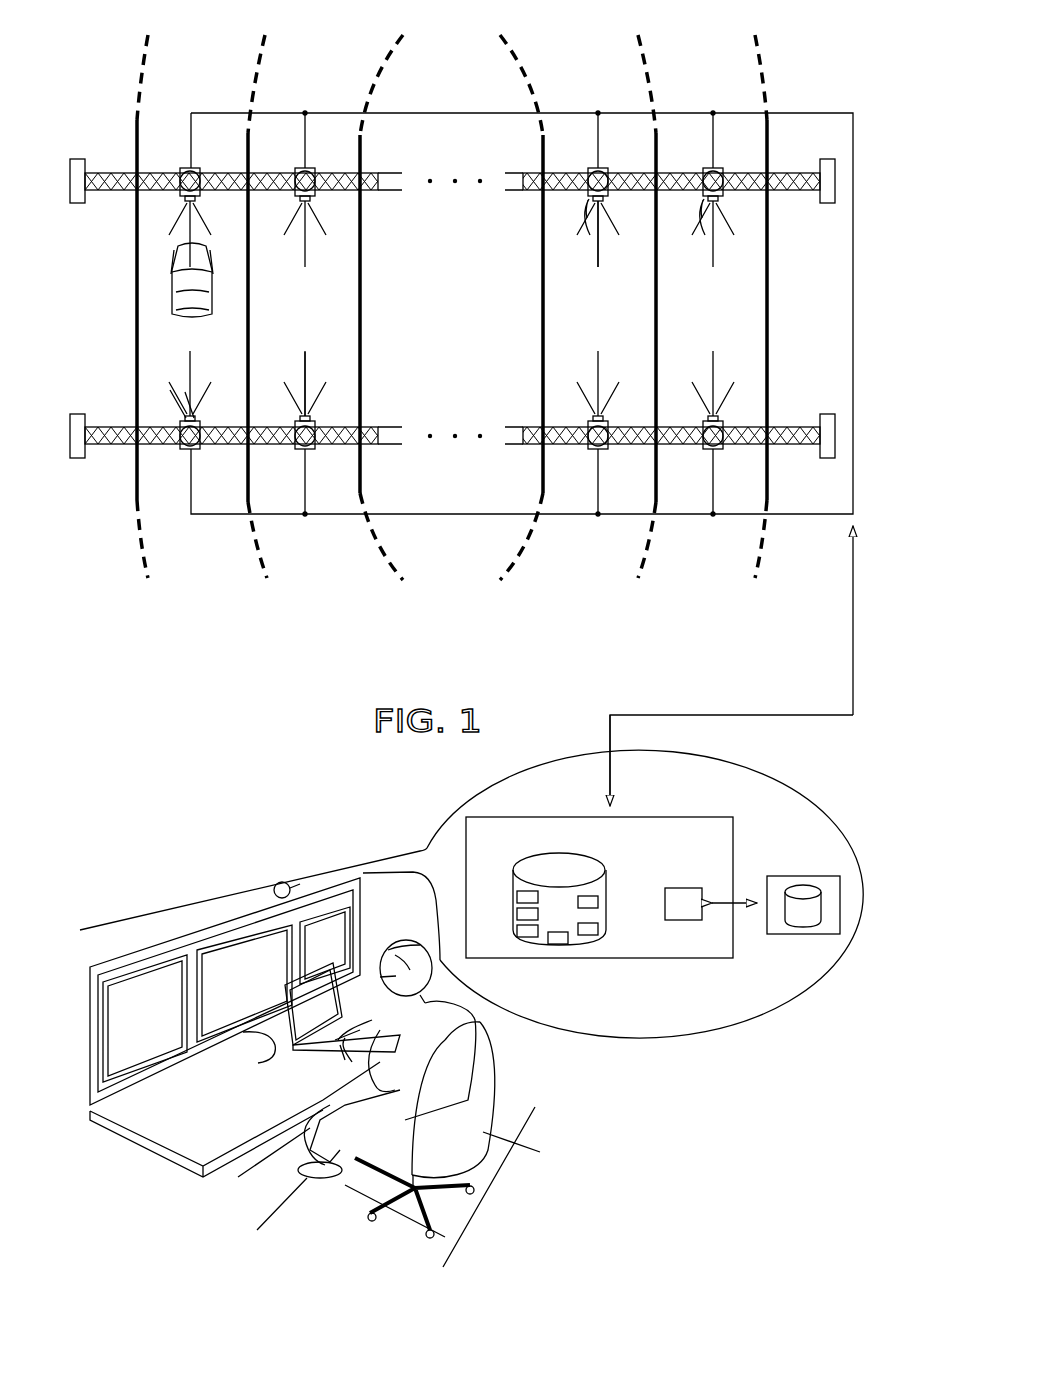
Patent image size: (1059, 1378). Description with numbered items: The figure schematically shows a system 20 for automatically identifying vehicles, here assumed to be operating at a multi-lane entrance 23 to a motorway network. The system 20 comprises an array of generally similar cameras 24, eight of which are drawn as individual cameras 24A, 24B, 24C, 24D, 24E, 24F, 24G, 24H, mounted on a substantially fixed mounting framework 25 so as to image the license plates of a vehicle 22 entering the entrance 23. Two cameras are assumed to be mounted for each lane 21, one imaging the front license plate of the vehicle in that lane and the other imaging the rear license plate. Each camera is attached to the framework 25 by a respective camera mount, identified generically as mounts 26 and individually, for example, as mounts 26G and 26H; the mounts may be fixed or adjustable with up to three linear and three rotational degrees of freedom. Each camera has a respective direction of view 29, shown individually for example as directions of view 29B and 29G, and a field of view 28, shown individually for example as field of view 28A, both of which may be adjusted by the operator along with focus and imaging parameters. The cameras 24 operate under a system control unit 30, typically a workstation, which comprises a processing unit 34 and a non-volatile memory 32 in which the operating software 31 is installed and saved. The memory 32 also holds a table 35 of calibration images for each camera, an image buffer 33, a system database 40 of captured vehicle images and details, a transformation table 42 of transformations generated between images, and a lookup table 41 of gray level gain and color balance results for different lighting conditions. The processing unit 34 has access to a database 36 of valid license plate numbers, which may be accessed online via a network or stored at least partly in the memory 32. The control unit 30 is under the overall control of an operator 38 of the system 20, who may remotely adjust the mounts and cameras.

The system 20 is at (140, 620).
The lane 21 is at (504, 538).
The vehicle 22 is at (176, 290).
The multi-lane entrance 23 is at (782, 49).
The cameras 24 is at (227, 630).
The camera 24A is at (199, 418).
The camera 24B is at (314, 418).
The camera 24C is at (607, 418).
The camera 24D is at (722, 418).
The camera 24E is at (201, 192).
The camera 24F is at (315, 195).
The camera 24G is at (608, 199).
The camera 24H is at (723, 199).
The mounting framework 25 is at (382, 191).
The camera mounts 26 is at (517, 372).
The camera mount 26G is at (590, 200).
The camera mount 26H is at (705, 200).
The field of view 28 is at (781, 276).
The field of view 28A is at (184, 418).
The direction of view 29 is at (317, 630).
The direction of view 29B is at (305, 352).
The direction of view 29G is at (598, 267).
The system control unit 30 is at (471, 894).
The software 31 is at (517, 931).
The non-volatile memory 32 is at (513, 872).
The image buffer 33 is at (517, 914).
The processing unit 34 is at (683, 888).
The table 35 is at (517, 896).
The database 36 is at (803, 876).
The operator 38 is at (482, 1060).
The system database 40 is at (598, 902).
The lookup table 41 is at (558, 944).
The transformation table 42 is at (598, 929).